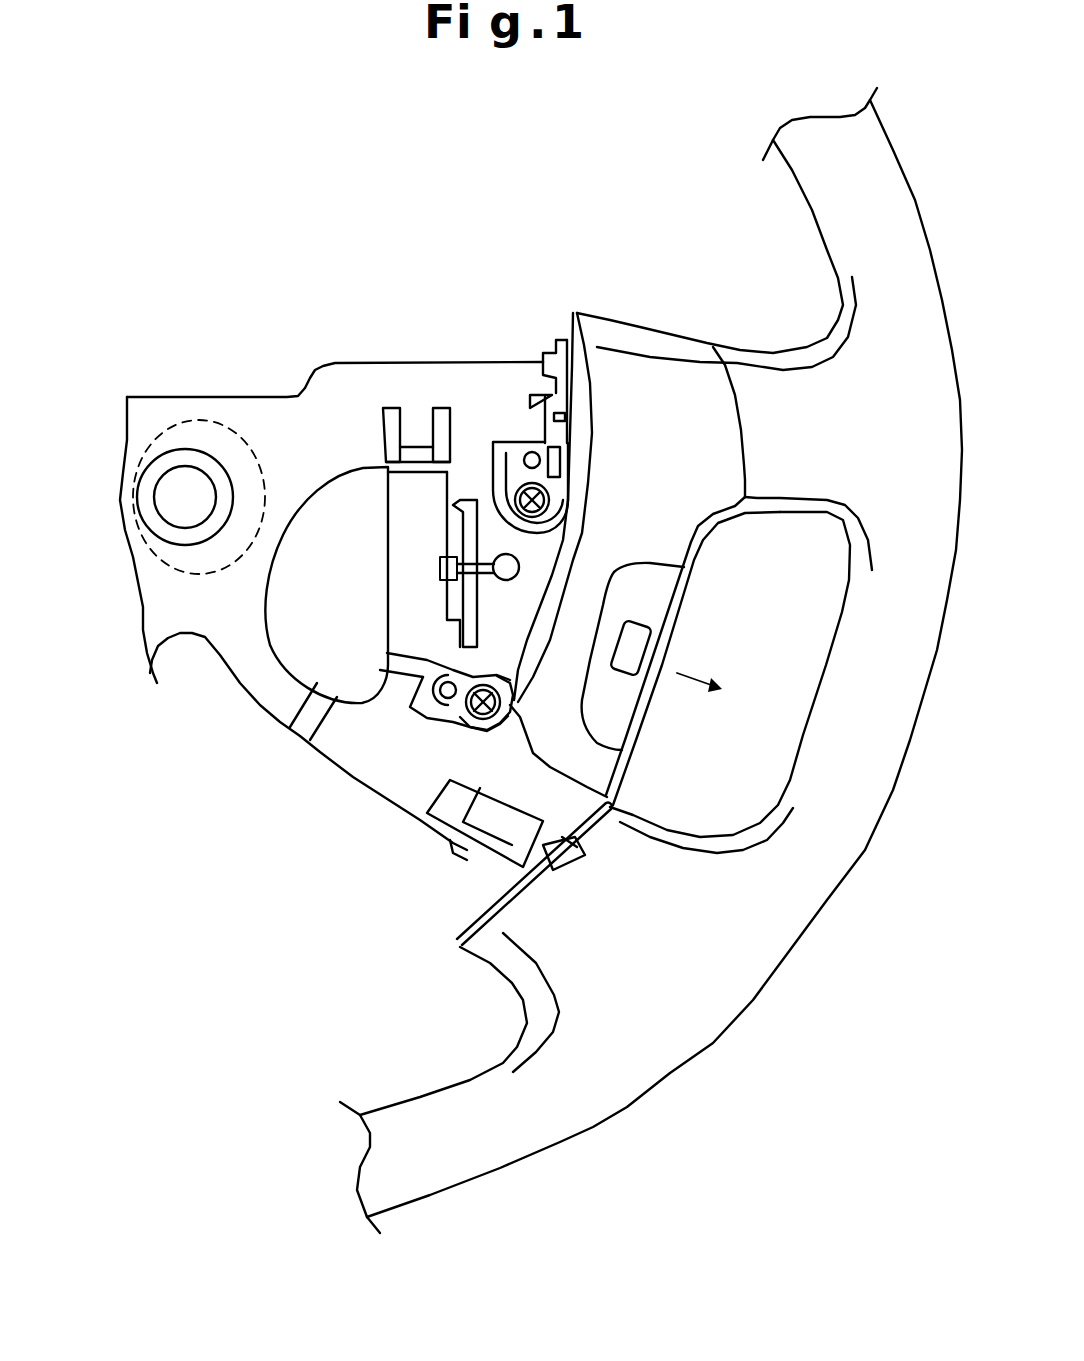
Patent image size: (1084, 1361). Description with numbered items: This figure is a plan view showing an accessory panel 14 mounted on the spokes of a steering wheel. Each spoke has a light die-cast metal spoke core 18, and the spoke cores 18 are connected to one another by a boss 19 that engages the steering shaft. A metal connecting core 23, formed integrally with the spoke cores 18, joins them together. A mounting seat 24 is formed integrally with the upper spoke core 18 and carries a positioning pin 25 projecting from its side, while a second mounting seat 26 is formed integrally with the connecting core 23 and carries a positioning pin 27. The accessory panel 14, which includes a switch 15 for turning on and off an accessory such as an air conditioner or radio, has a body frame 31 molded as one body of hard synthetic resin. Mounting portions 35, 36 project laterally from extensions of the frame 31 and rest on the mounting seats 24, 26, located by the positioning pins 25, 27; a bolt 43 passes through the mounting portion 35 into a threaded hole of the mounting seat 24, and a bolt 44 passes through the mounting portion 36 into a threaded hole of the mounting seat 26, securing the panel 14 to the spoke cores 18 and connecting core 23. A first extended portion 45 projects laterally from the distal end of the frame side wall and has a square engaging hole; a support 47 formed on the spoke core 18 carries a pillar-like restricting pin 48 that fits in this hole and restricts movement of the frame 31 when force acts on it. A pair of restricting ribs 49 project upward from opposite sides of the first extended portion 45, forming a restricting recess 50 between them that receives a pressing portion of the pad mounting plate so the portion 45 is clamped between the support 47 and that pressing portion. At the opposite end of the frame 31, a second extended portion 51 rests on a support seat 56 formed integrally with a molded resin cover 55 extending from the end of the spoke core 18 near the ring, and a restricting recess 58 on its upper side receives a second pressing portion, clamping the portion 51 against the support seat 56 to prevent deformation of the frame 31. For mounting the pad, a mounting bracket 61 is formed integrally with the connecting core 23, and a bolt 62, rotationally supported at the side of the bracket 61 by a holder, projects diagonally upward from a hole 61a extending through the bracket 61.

The accessory panel 14 is at (655, 322).
The switch 15 is at (640, 628).
The spoke core 18 is at (403, 361).
The boss 19 is at (199, 449).
The connecting core 23 is at (388, 562).
The mounting seat 24 is at (495, 462).
The positioning pin 25 is at (560, 466).
The mounting seat 26 is at (395, 652).
The positioning pin 27 is at (447, 705).
The body frame 31 is at (724, 345).
The mounting portion 35 is at (580, 537).
The mounting portion 36 is at (510, 730).
The bolt 43 is at (560, 498).
The bolt 44 is at (503, 707).
The first extended portion 45 is at (557, 367).
The support 47 is at (530, 400).
The restricting pin 48 is at (566, 416).
The restricting ribs 49 is at (558, 337).
The restricting recess 50 is at (547, 351).
The second extended portion 51 is at (470, 872).
The cover 55 is at (455, 857).
The support seat 56 is at (470, 852).
The restricting recess 58 is at (505, 893).
The mounting bracket 61 is at (453, 528).
The hole 61a is at (440, 585).
The bolt 62 is at (490, 583).